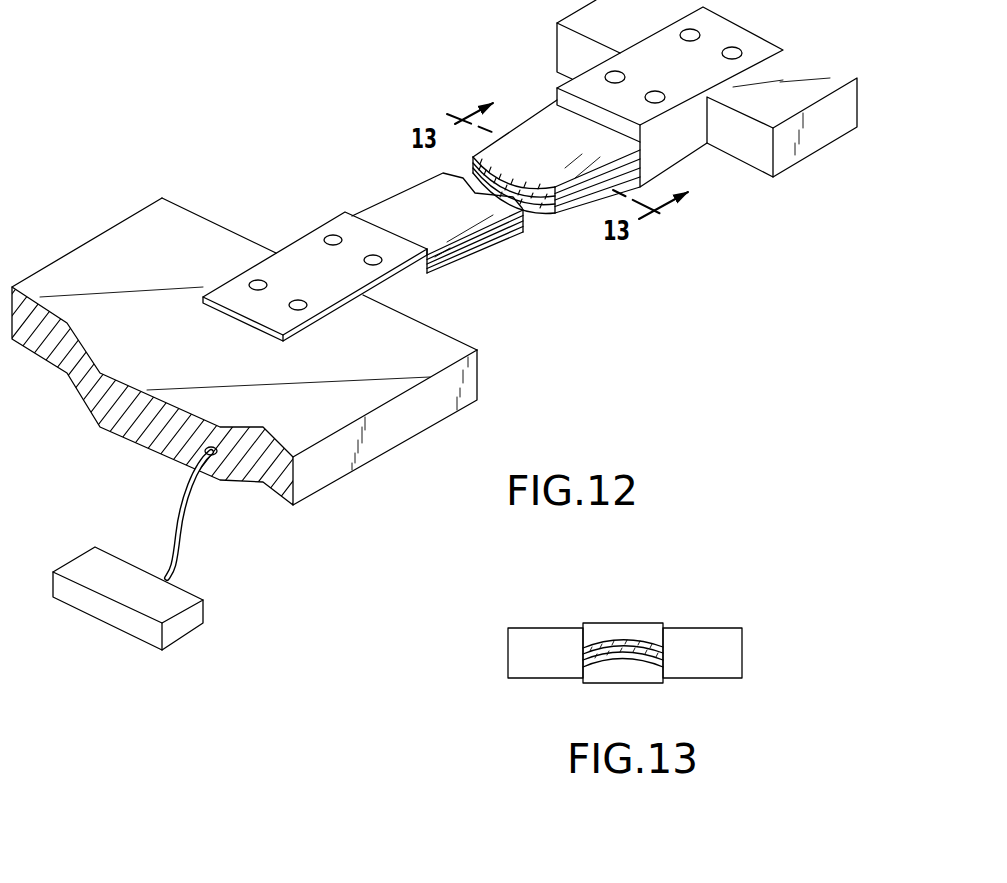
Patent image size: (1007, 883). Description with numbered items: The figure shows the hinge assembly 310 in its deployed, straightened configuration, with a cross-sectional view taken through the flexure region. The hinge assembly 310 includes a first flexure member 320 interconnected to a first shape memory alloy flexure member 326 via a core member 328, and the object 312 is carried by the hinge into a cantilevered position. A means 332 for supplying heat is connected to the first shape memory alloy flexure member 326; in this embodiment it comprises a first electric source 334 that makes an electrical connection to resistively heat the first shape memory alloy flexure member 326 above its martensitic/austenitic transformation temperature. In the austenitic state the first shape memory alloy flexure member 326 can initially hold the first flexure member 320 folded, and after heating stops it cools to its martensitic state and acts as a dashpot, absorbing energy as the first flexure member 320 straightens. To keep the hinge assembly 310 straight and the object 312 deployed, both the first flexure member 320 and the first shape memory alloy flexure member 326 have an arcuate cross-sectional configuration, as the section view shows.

In FIG. 12, the hinge assembly 310 is at (606, 280).
In FIG. 12, the object 312 is at (657, 15).
In FIG. 13, the object 312 is at (562, 660).
In FIG. 12, the first flexure member 320 is at (495, 255).
In FIG. 13, the first flexure member 320 is at (660, 683).
In FIG. 12, the first shape memory alloy flexure member 326 is at (455, 223).
In FIG. 13, the first shape memory alloy flexure member 326 is at (652, 645).
In FIG. 12, the core member 328 is at (523, 224).
In FIG. 13, the core member 328 is at (668, 656).
In FIG. 12, the means for supplying heat 332 is at (134, 683).
In FIG. 12, the first electric source 334 is at (177, 635).